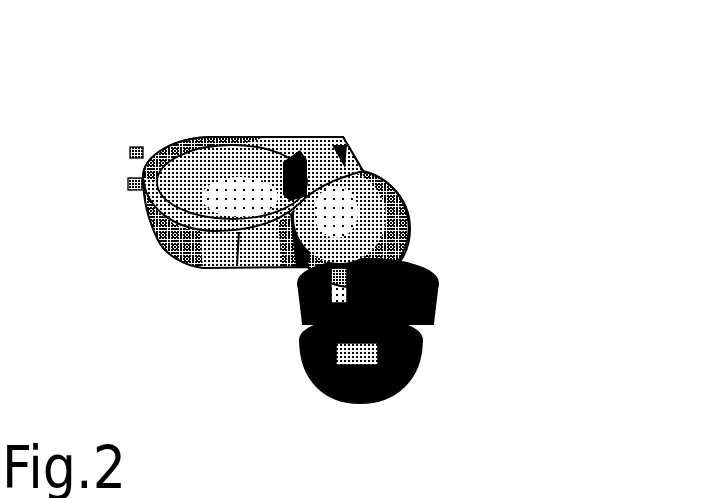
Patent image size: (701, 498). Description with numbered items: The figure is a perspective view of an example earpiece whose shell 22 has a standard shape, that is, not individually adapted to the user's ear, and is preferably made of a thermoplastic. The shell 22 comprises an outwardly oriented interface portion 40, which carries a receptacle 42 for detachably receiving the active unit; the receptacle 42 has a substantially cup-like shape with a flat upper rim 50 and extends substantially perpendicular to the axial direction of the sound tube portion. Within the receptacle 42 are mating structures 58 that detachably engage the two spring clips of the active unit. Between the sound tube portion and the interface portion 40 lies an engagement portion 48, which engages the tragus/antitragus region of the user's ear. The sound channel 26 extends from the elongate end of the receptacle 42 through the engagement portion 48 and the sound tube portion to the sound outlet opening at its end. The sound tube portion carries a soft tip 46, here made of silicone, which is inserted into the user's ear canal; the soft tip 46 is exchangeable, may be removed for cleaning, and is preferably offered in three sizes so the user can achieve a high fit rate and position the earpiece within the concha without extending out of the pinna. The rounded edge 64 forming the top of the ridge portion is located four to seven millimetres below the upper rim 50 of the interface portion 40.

The interface portion 40 is at (318, 181).
The receptacle 42 is at (282, 111).
The flat upper rim 50 is at (220, 115).
The mating structures 58 is at (186, 154).
The sound channel 26 is at (302, 190).
The shell 22 is at (425, 176).
The rounded edge 64 is at (397, 200).
The engagement portion 48 is at (443, 194).
The soft tip 46 is at (437, 300).